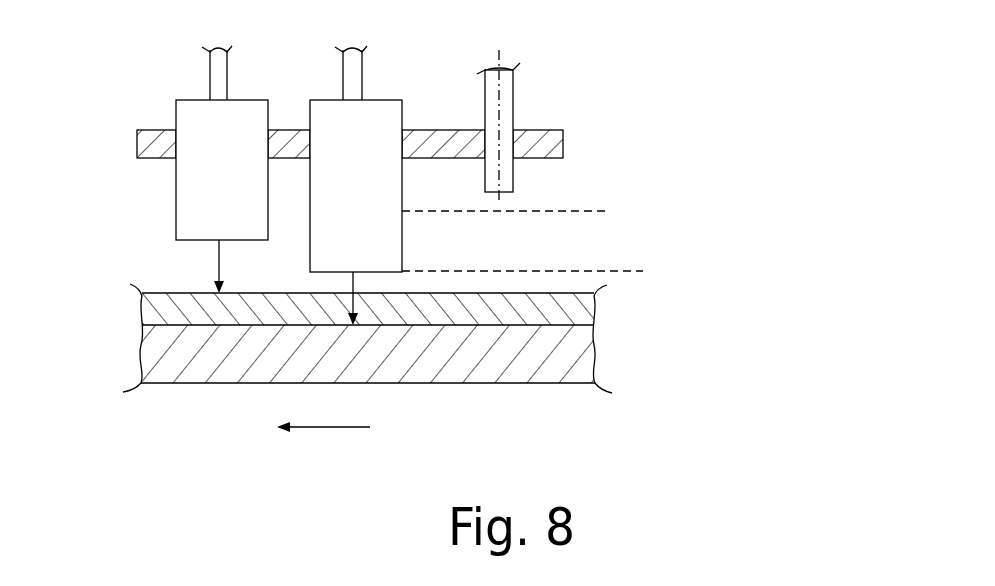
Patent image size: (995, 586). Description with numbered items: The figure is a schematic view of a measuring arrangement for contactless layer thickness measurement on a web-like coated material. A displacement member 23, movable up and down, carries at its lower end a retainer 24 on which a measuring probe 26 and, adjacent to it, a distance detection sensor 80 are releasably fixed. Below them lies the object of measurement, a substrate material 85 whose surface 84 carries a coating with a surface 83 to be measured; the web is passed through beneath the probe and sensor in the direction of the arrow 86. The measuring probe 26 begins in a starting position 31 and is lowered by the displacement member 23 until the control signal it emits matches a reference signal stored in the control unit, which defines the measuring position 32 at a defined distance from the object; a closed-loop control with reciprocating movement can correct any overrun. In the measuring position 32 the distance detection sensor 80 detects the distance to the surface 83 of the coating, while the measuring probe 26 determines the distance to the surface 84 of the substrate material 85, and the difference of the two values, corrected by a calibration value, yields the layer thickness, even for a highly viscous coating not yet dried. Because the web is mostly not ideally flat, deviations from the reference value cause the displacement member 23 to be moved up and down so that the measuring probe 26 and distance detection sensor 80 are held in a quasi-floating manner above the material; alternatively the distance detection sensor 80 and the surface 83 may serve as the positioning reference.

The displacement member 23 is at (503, 97).
The retainer 24 is at (136, 142).
The measuring probe 26 is at (340, 209).
The starting position 31 is at (574, 202).
The measuring position 32 is at (603, 262).
The distance detection sensor 80 is at (207, 209).
The surface to be measured 83 is at (384, 316).
The surface of the substrate material 84 is at (572, 309).
The substrate material 85 is at (573, 353).
The arrow 86 is at (323, 428).